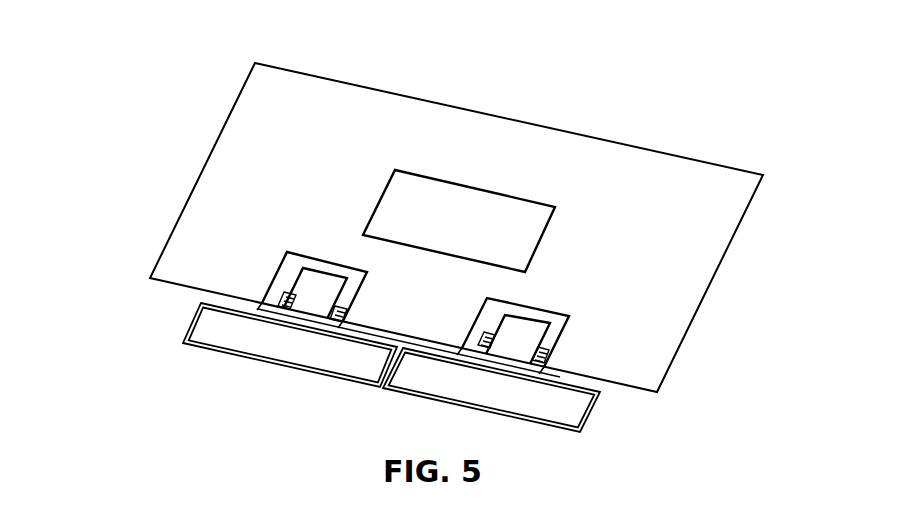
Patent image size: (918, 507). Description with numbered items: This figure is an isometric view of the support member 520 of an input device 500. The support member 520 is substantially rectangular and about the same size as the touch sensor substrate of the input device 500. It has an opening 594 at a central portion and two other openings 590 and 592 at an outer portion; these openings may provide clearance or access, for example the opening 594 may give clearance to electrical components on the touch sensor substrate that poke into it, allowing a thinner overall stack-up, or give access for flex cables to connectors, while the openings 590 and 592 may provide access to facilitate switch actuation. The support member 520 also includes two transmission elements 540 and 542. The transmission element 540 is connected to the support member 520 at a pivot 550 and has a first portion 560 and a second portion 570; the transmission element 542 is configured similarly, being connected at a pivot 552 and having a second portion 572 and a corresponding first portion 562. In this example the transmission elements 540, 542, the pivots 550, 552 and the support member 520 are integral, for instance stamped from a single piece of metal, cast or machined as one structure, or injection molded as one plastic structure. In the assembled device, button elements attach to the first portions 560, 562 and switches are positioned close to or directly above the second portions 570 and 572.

The input device 500 is at (232, 33).
The support member 520 is at (272, 125).
The opening 594 is at (452, 208).
The second portion 570 is at (230, 307).
The pivot 550 is at (292, 307).
The opening 590 is at (338, 318).
The second portion 572 is at (613, 335).
The opening 592 is at (538, 343).
The pivot 552 is at (548, 365).
The transmission element 540 is at (222, 326).
The first portion 560 is at (287, 347).
The transmission element 542 is at (580, 405).
The second strip surface 562 is at (500, 383).